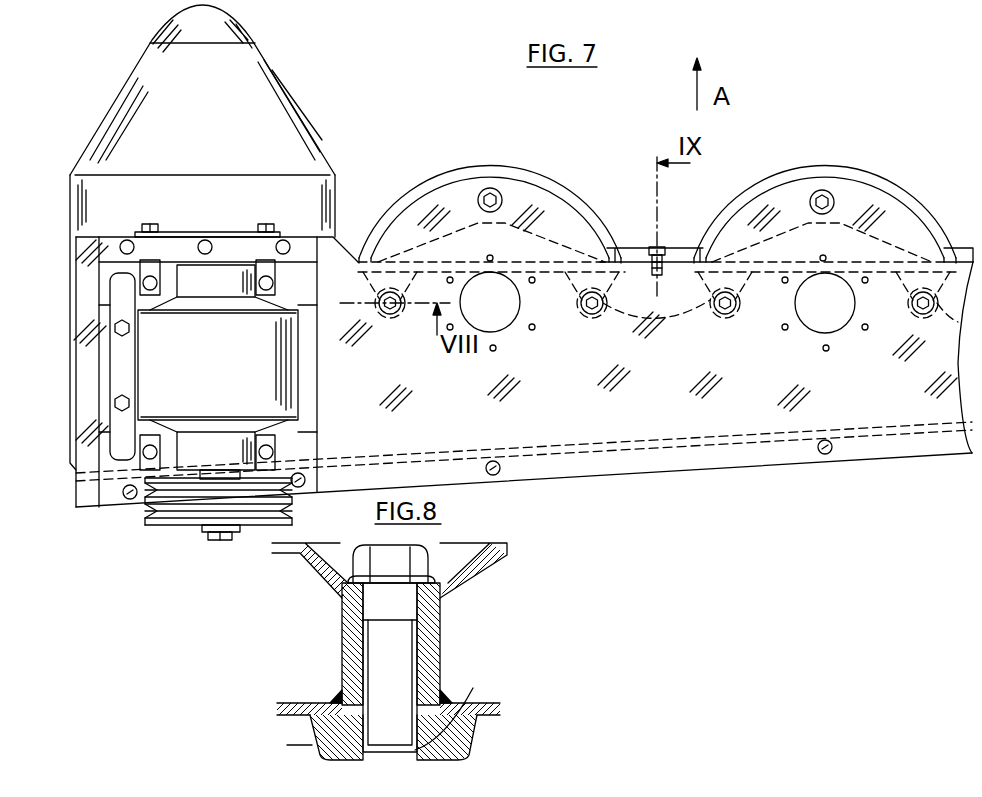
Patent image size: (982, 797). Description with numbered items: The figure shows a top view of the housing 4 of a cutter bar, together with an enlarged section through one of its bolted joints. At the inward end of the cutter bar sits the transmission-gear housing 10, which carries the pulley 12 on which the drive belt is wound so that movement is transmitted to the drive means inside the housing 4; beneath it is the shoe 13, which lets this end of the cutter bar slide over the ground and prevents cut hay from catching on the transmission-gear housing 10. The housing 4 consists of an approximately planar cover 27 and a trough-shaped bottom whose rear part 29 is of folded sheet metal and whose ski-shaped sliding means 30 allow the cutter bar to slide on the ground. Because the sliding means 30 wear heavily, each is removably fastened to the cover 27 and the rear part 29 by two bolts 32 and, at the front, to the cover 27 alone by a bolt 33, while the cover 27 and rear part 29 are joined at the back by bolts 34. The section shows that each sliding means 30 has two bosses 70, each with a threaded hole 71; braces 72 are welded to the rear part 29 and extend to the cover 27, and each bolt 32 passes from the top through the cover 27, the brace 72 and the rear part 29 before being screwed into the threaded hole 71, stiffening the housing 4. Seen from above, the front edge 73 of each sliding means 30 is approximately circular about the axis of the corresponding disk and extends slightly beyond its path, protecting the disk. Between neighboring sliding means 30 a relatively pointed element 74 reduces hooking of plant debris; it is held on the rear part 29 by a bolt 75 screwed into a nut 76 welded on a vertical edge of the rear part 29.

In FIG. 7, the housing 4 is at (688, 463).
In FIG. 7, the transmission-gear housing 10 is at (258, 375).
In FIG. 7, the pulley 12 is at (170, 518).
In FIG. 7, the shoe 13 is at (272, 101).
In FIG. 7, the cover 27 is at (0, 365).
In FIG. 8, the cover 27 is at (465, 570).
In FIG. 7, the rear part 29 is at (755, 440).
In FIG. 8, the rear part 29 is at (295, 703).
In FIG. 7, the sliding means 30 is at (448, 182).
In FIG. 8, the sliding means 30 is at (310, 731).
In FIG. 7, the bolt 32 is at (395, 312).
In FIG. 8, the bolt 32 is at (382, 602).
In FIG. 7, the bolt 33 is at (490, 188).
In FIG. 7, the bolt 34 is at (126, 498).
In FIG. 7, the boss 70 is at (388, 315).
In FIG. 8, the boss 70 is at (462, 742).
In FIG. 8, the threaded hole 71 is at (457, 704).
In FIG. 8, the brace 72 is at (352, 650).
In FIG. 7, the front edge 73 is at (560, 190).
In FIG. 7, the element 74 is at (628, 250).
In FIG. 7, the bolt 75 is at (666, 250).
In FIG. 7, the nut 76 is at (657, 275).